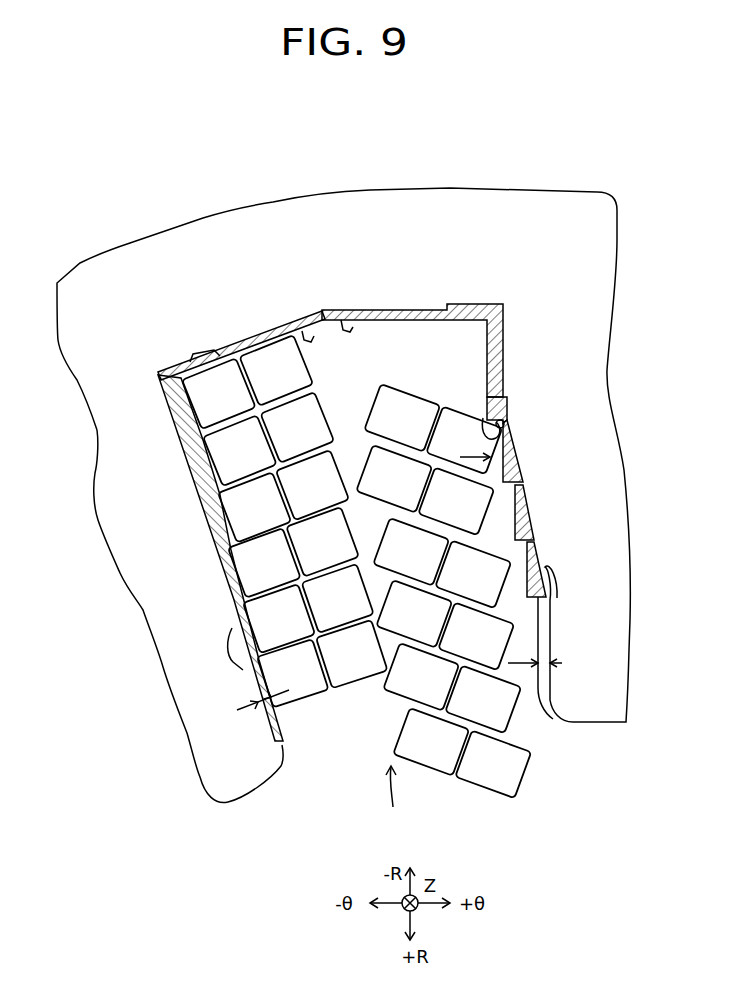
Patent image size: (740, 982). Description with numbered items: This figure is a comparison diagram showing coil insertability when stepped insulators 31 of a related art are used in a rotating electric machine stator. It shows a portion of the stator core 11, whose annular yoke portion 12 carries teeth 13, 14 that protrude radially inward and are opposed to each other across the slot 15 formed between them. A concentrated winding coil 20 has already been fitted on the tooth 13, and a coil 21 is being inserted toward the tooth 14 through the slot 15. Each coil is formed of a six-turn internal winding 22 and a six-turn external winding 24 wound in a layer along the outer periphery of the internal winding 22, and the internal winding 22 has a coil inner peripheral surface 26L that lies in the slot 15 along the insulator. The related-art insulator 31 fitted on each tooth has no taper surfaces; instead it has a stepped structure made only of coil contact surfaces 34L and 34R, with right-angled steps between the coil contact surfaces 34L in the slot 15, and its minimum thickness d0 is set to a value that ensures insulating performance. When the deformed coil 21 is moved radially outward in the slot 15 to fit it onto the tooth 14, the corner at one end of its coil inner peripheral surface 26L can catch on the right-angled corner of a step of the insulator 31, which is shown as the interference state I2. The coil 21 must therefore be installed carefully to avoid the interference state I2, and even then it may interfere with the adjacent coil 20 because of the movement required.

The stator core 11 is at (203, 218).
The annular yoke portion 12 is at (555, 213).
The tooth 13 is at (253, 773).
The tooth 14 is at (590, 710).
The slot 15 is at (403, 843).
The concentrated winding coil 20 is at (378, 782).
The coil 21 is at (510, 828).
The internal winding 22 is at (360, 673).
The external winding 24 is at (302, 697).
The coil inner peripheral surface 26L is at (440, 438).
The stepped insulator 31 is at (267, 332).
The coil contact surface 34L is at (507, 400).
The coil contact surface 34R is at (195, 456).
The minimum thickness d0 is at (562, 663).
The interference state I2 is at (480, 427).